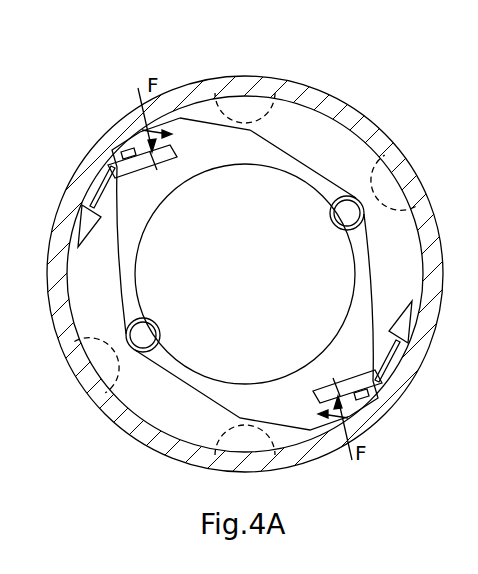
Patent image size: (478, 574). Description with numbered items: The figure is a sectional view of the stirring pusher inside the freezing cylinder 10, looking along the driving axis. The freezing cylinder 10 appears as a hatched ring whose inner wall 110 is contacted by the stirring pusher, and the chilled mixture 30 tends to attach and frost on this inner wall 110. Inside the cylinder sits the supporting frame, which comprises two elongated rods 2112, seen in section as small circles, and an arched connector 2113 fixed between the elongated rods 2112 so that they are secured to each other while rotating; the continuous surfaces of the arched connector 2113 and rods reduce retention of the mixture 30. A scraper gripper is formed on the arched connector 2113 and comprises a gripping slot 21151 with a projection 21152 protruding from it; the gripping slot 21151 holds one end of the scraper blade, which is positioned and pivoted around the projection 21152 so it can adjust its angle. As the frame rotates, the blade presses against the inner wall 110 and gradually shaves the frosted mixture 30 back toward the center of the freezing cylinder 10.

The freezing cylinder 10 is at (118, 413).
The inner wall 110 is at (155, 445).
The mixture 30 is at (102, 183).
The elongated rod 2112 is at (347, 213).
The arched connector 2113 is at (278, 160).
The gripping slot 21151 is at (167, 140).
The projection 21152 is at (130, 158).